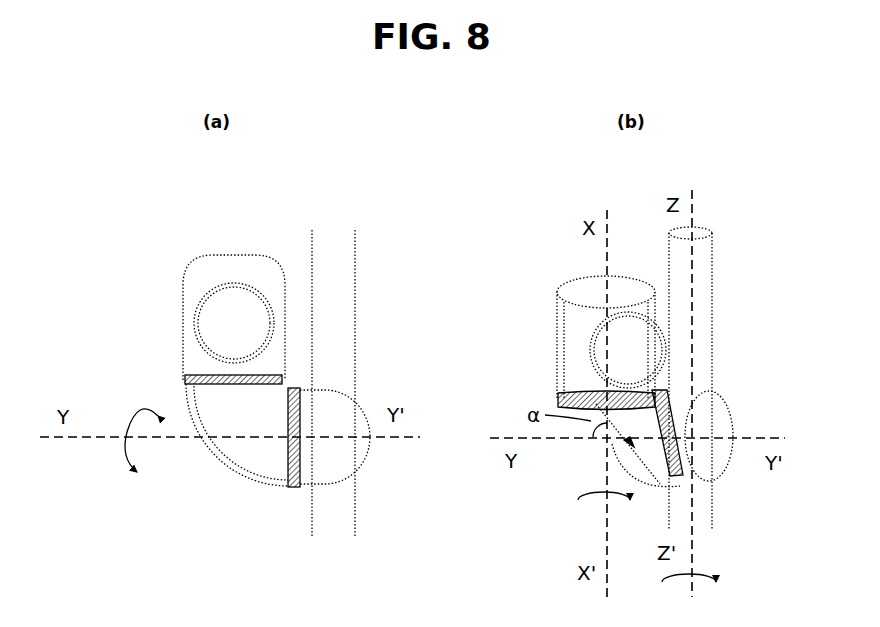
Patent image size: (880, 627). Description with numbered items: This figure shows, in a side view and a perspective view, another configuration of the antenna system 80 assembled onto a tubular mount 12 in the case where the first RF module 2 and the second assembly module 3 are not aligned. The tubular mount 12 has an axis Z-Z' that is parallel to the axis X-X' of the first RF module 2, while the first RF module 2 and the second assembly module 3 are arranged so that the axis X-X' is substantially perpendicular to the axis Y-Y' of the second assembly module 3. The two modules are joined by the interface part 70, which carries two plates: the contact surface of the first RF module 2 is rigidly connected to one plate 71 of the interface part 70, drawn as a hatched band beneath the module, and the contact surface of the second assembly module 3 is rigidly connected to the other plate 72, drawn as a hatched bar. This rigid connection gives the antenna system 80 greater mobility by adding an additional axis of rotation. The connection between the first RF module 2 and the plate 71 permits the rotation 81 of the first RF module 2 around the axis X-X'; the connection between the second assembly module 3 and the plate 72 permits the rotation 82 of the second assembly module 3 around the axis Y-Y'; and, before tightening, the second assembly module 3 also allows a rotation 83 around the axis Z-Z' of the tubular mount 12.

The antenna system 80 is at (176, 268).
The first RF module 2 is at (194, 290).
The plate 71 is at (186, 383).
The interface part 70 is at (282, 450).
The plate 72 is at (286, 488).
The second assembly module 3 is at (716, 422).
The tubular mount 12 is at (342, 505).
The rotation 82 is at (127, 462).
The rotation 81 is at (600, 494).
The rotation 83 is at (717, 581).